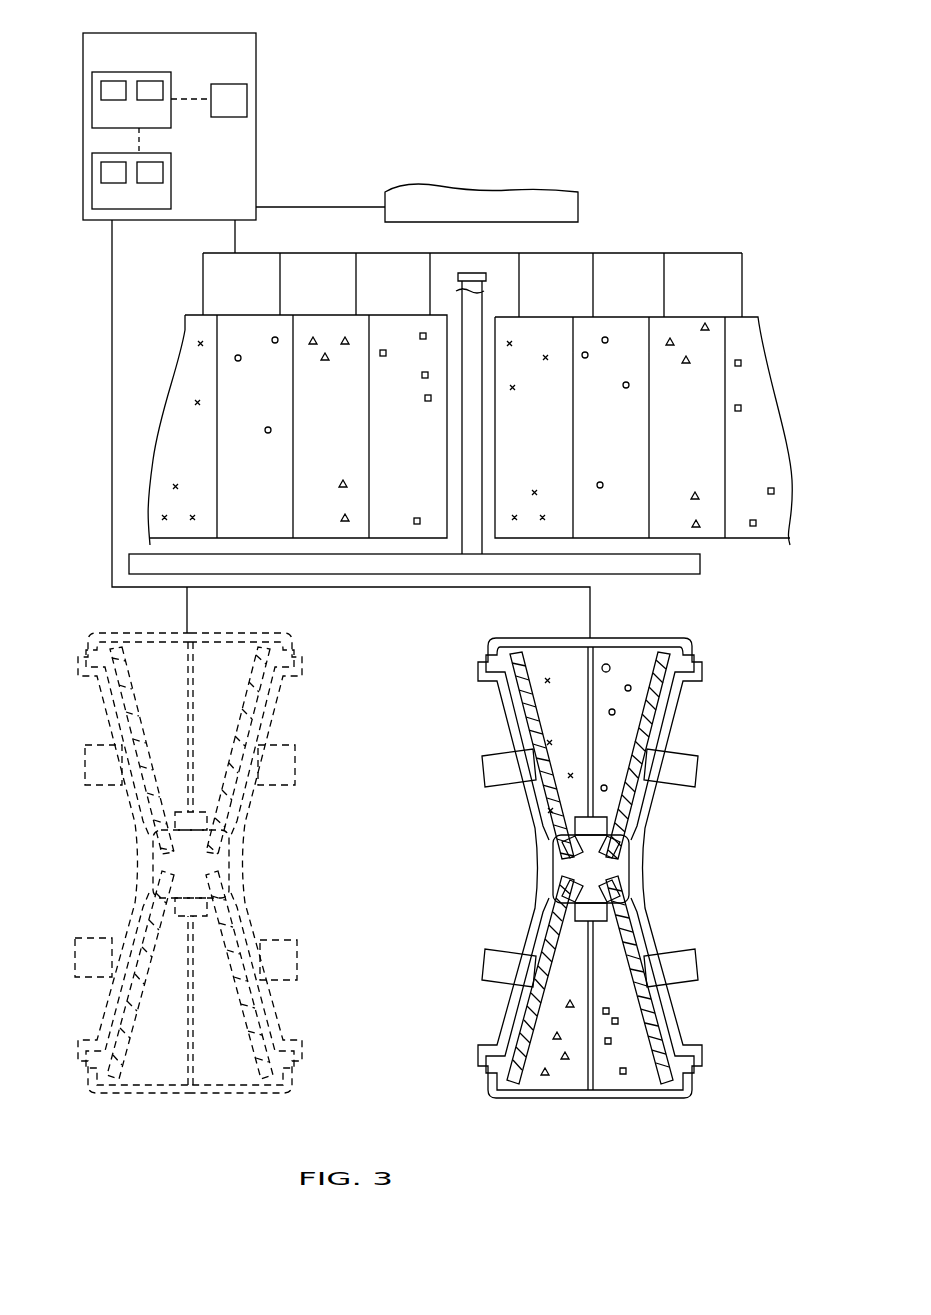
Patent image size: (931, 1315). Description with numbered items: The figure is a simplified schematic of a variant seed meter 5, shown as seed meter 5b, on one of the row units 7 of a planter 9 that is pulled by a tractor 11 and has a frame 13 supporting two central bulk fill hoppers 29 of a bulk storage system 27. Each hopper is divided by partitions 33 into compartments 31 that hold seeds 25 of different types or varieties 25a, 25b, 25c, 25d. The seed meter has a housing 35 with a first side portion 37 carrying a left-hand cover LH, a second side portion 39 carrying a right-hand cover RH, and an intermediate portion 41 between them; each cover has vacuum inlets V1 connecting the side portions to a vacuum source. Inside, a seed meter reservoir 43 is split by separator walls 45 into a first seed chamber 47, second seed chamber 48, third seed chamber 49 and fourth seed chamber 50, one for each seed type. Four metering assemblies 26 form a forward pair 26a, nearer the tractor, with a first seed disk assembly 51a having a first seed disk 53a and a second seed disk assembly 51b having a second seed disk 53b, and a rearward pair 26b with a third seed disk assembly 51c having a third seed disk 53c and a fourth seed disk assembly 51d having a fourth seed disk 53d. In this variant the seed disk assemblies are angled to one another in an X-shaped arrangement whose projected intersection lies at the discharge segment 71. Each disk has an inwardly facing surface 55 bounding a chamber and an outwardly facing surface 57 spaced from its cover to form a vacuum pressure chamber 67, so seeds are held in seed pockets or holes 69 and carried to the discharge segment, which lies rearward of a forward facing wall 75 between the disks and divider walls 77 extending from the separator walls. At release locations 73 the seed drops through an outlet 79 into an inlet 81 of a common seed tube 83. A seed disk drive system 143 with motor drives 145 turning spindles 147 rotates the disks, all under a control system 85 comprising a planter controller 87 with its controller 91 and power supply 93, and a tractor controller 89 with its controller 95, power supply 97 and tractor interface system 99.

The seed meter 5 is at (78, 1092).
The seed meter 5b is at (95, 1100).
The row unit 7 is at (182, 1108).
The planter 9 is at (598, 228).
The tractor 11 is at (410, 188).
The frame 13 is at (129, 560).
The seeds 25 is at (183, 420).
The first seed type 25a is at (175, 488).
The second seed type 25b is at (262, 480).
The third seed type 25c is at (345, 480).
The fourth seed type 25d is at (425, 480).
The metering assembly 26 is at (488, 640).
The forward pair of metering assemblies 26a is at (705, 655).
The rearward pair of metering assemblies 26b is at (715, 1100).
The bulk storage system 27 is at (465, 698).
The bulk fill hopper 29 is at (318, 305).
The compartment 31 is at (262, 305).
The partition 33 is at (222, 520).
The housing 35 is at (583, 630).
The first side portion 37 is at (480, 1090).
The second side portion 39 is at (695, 1090).
The intermediate portion 41 is at (590, 1102).
The seed meter reservoir 43 is at (578, 1085).
The separator wall 45 is at (600, 850).
The first seed chamber 47 is at (560, 660).
The second seed chamber 48 is at (618, 655).
The third seed chamber 49 is at (560, 1100).
The fourth seed chamber 50 is at (600, 1090).
The first seed disk assembly 51a is at (520, 690).
The second seed disk assembly 51b is at (660, 700).
The third seed disk assembly 51c is at (535, 1010).
The fourth seed disk assembly 51d is at (645, 1010).
The first seed disk 53a is at (540, 725).
The second seed disk 53b is at (650, 740).
The third seed disk 53c is at (525, 1000).
The fourth seed disk 53d is at (655, 1000).
The inwardly facing surface 55 is at (530, 722).
The outwardly facing surface 57 is at (505, 700).
The vacuum pressure chamber 67 is at (478, 668).
The seed pockets or holes 69 is at (478, 662).
The discharge segment 71 is at (660, 855).
The release location 73 is at (565, 870).
The forward facing wall 75 is at (608, 668).
The divider wall 77 is at (565, 845).
The outlet 79 is at (560, 851).
The inlet 81 is at (620, 888).
The seed tube 83 is at (640, 895).
The control system 85 is at (170, 33).
The planter controller 87 is at (171, 195).
The tractor controller 89 is at (171, 117).
The controller 91 is at (101, 168).
The power supply 93 is at (163, 168).
The controller 95 is at (101, 88).
The power supply 97 is at (148, 100).
The tractor interface system 99 is at (228, 84).
The seed disk drive system 143 is at (480, 775).
The motor drive 145 is at (484, 790).
The spindle 147 is at (535, 785).
The left-hand cover LH is at (460, 868).
The right-hand cover RH is at (712, 868).
The vacuum inlet V1 is at (480, 682).